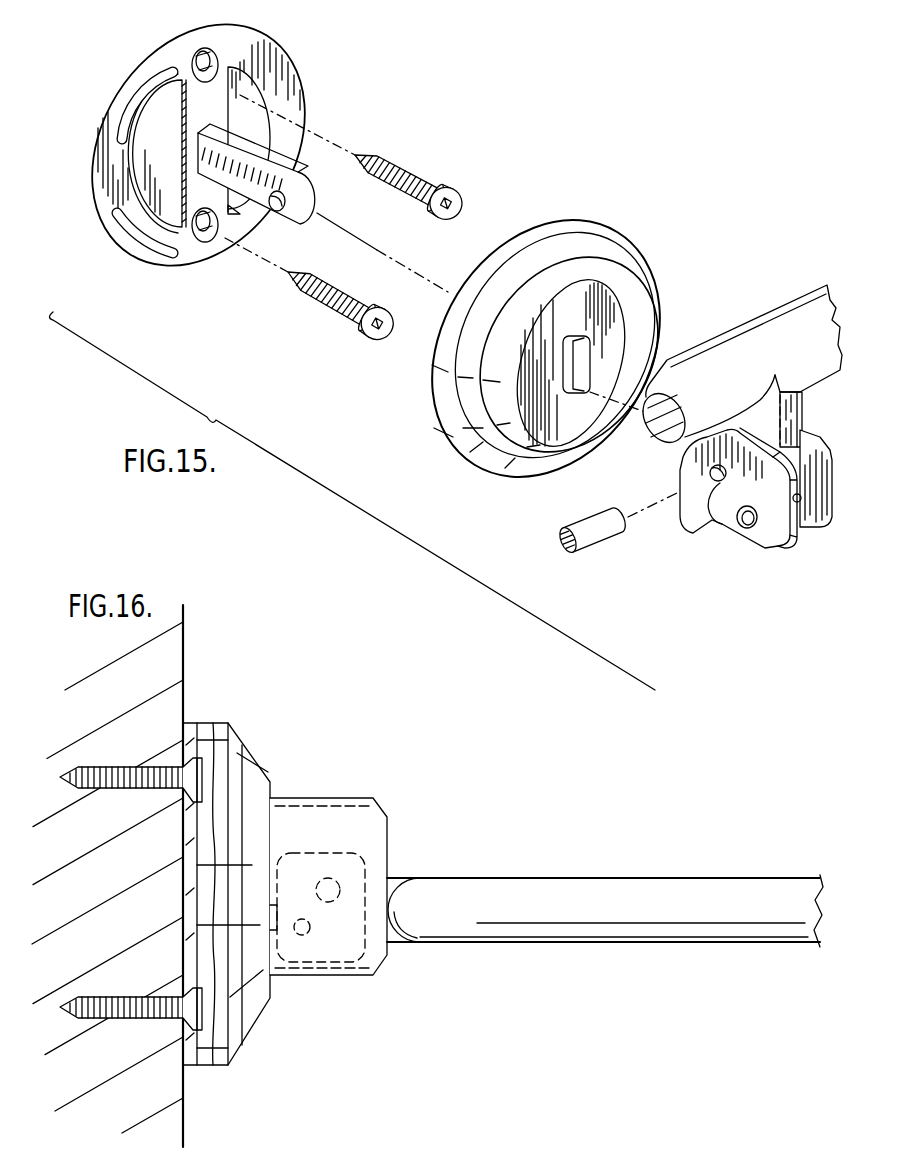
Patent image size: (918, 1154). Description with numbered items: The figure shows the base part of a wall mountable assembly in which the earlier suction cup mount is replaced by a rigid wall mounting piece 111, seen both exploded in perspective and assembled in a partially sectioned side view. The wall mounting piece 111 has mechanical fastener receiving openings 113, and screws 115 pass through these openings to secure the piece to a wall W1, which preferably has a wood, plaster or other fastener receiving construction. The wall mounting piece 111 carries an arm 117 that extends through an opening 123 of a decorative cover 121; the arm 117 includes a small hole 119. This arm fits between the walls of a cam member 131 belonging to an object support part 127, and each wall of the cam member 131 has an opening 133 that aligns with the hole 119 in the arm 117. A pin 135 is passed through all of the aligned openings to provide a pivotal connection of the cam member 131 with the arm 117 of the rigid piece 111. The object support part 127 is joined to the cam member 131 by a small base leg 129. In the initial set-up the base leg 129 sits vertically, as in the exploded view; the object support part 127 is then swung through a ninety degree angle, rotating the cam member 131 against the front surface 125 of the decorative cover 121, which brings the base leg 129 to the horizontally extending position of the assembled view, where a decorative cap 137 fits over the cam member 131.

In FIG. 15, the wall mounting piece 111 is at (183, 260).
In FIG. 15, the mechanical fastener receiving openings 113 is at (218, 60).
In FIG. 15, the screws 115 is at (416, 172).
In FIG. 15, the arm 117 is at (282, 164).
In FIG. 15, the hole 119 is at (277, 210).
In FIG. 15, the decorative cover 121 is at (563, 227).
In FIG. 15, the opening 123 is at (586, 356).
In FIG. 15, the front surface 125 is at (617, 302).
In FIG. 15, the object support part 127 is at (798, 305).
In FIG. 15, the base leg 129 is at (790, 413).
In FIG. 15, the cam member 131 is at (735, 530).
In FIG. 15, the opening 133 is at (711, 526).
In FIG. 15, the pin 135 is at (593, 545).
In FIG. 16, the decorative cap 137 is at (344, 817).
In FIG. 16, the wall W1 is at (175, 663).